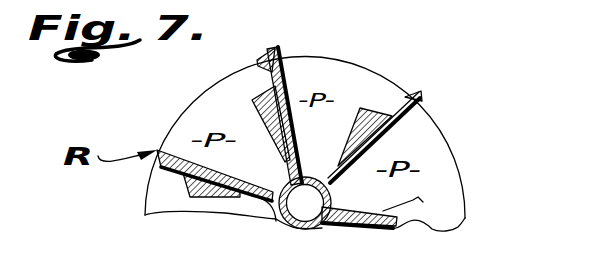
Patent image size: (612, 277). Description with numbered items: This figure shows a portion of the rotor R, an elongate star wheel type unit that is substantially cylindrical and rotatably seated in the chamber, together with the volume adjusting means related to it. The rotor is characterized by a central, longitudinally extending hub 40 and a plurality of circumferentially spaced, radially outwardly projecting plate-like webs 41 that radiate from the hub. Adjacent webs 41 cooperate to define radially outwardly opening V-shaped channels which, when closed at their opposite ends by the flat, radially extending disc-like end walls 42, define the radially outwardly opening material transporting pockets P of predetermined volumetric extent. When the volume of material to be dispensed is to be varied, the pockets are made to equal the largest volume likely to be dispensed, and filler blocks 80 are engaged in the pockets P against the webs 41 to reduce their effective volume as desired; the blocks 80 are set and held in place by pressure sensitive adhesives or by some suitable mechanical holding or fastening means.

The hub 40 is at (332, 190).
The plate-like webs 41 is at (282, 62).
The disc-like end walls 42 is at (442, 144).
The filler blocks 80 is at (363, 110).